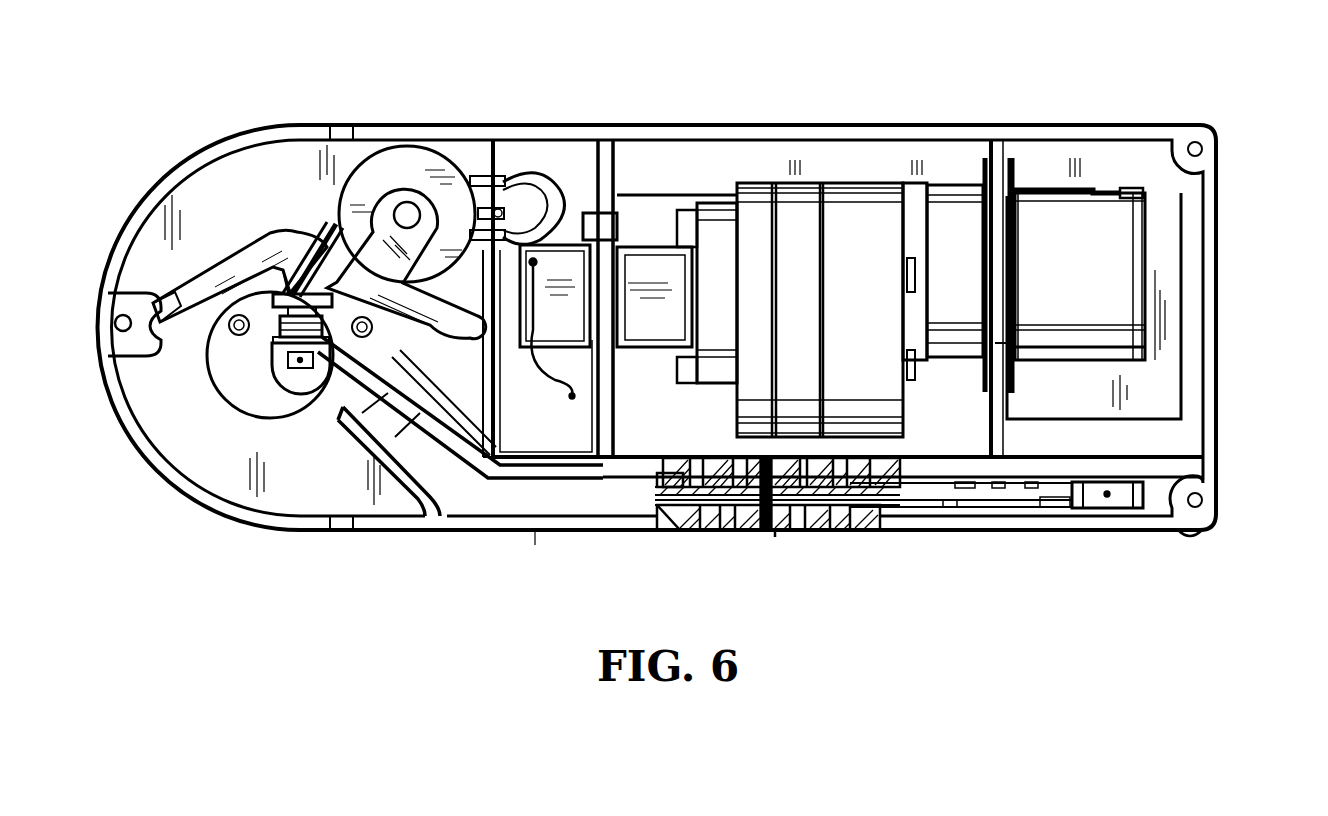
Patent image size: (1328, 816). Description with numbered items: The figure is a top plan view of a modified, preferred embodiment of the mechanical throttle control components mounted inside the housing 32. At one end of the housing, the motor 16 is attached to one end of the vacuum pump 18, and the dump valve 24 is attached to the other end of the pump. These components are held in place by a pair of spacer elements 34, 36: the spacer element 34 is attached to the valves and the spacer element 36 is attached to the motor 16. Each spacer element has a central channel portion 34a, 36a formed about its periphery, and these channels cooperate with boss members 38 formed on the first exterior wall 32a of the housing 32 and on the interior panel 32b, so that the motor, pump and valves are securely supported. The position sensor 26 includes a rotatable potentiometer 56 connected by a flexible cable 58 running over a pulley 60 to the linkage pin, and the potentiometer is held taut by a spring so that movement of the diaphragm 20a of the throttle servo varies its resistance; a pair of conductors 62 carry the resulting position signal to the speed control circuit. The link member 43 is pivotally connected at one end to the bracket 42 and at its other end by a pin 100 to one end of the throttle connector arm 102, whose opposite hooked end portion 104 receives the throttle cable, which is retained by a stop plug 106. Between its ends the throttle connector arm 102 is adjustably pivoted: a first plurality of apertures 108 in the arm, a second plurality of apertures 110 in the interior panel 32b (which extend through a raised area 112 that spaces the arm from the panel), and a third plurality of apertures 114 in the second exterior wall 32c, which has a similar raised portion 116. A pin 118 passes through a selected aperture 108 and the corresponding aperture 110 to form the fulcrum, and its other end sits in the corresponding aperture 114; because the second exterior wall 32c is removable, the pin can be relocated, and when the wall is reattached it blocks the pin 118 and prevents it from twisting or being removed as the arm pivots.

The motor 16 is at (1103, 212).
The vacuum pump 18 is at (862, 212).
The diaphragm 20a is at (233, 383).
The dump valve 24 is at (655, 320).
The position sensor 26 is at (318, 195).
The housing 32 is at (1226, 310).
The first exterior wall 32a is at (740, 125).
The interior panel 32b is at (905, 462).
The second exterior wall 32c is at (625, 532).
The spacer element 34 is at (622, 238).
The central channel portion 34a is at (580, 397).
The spacer element 36 is at (1027, 189).
The central channel portion 36a is at (1000, 345).
The boss members 38 is at (620, 170).
The bracket 42 is at (330, 415).
The link member 43 is at (272, 327).
The rotatable potentiometer 56 is at (400, 160).
The flexible cable 58 is at (337, 224).
The pulley 60 is at (330, 292).
The conductors 62 is at (520, 176).
The pin 100 is at (300, 370).
The throttle connector arm 102 is at (500, 488).
The hooked end portion 104 is at (1040, 492).
The stop plug 106 is at (1107, 497).
The first plurality of apertures 108 is at (878, 452).
The second plurality of apertures 110 is at (718, 459).
The raised area 112 is at (685, 467).
The third plurality of apertures 114 is at (815, 532).
The raised portion 116 is at (655, 534).
The pin 118 is at (772, 537).